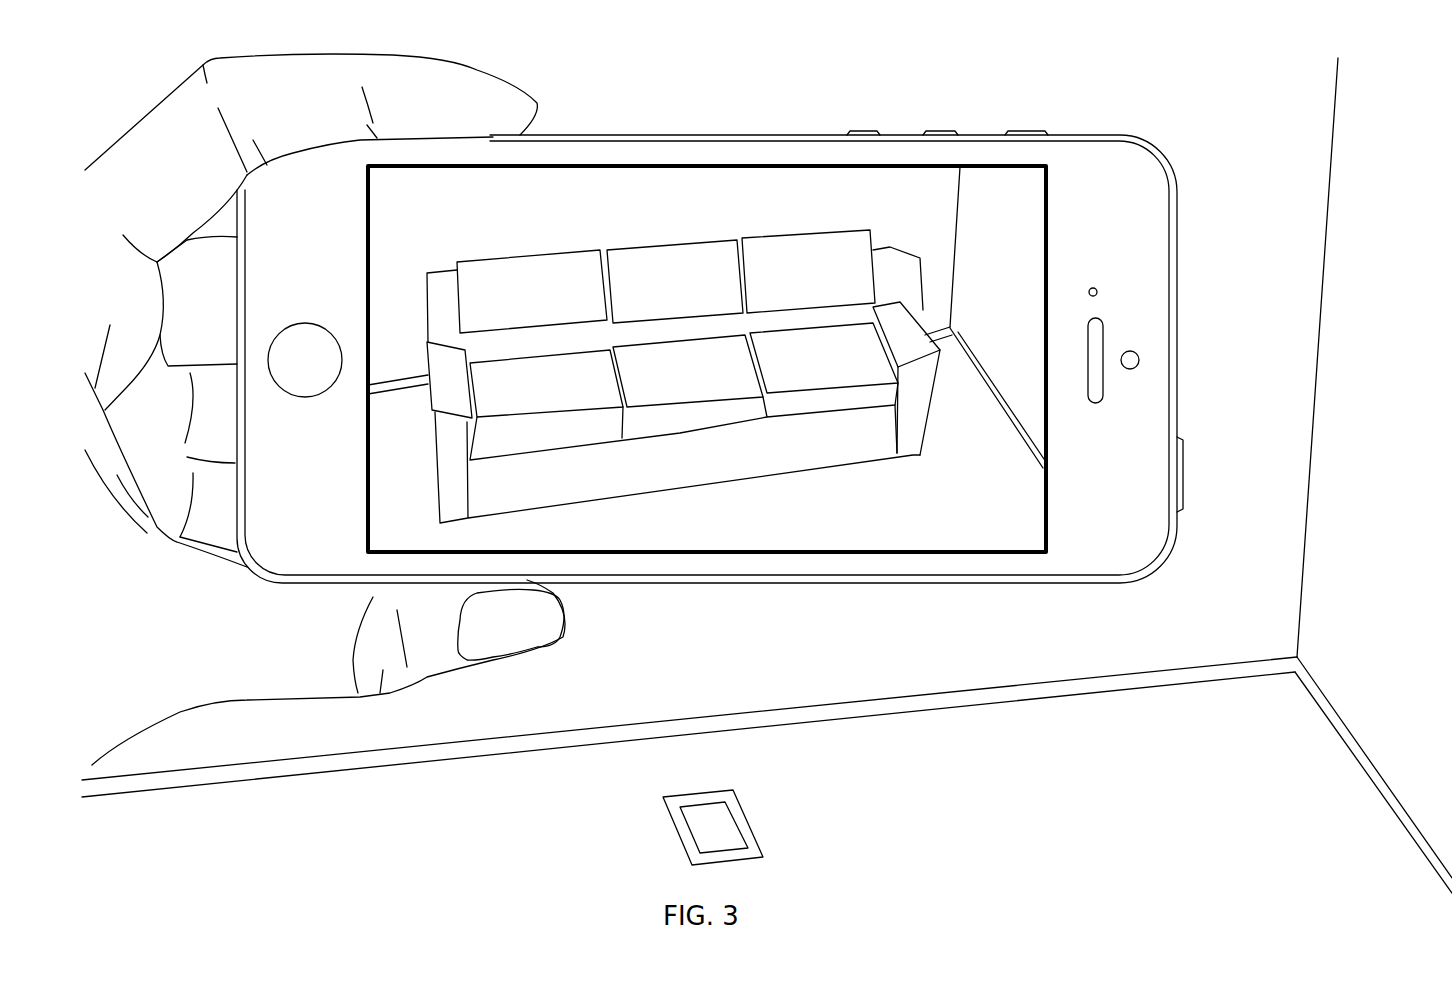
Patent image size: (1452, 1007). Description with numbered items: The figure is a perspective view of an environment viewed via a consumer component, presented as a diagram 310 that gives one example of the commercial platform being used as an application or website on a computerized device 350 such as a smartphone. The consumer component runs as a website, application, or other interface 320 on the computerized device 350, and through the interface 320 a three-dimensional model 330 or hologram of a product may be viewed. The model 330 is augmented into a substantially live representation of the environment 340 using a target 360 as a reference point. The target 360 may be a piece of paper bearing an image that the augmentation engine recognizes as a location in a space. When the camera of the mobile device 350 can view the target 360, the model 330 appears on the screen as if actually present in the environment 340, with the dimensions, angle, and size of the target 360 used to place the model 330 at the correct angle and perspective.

The diagram 310 is at (1247, 260).
The interface 320 is at (978, 520).
The three-dimensional model 330 is at (706, 413).
The substantially live representation of the environment 340 is at (782, 195).
The computerized device 350 is at (727, 367).
The target 360 is at (723, 823).